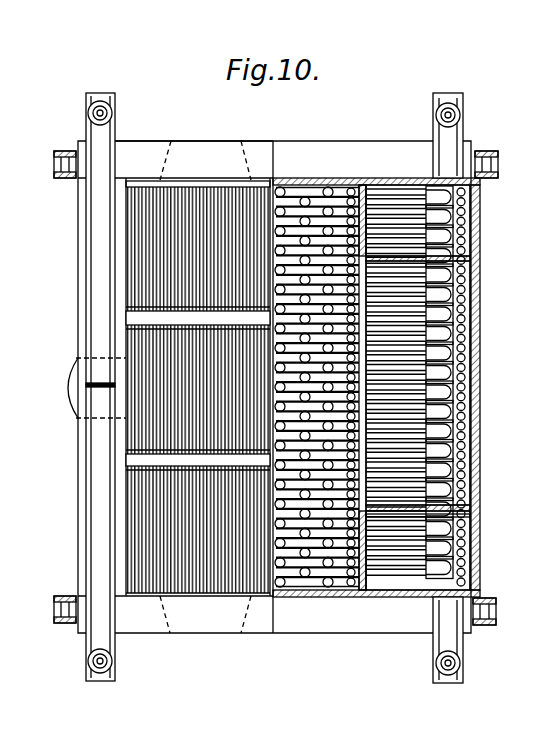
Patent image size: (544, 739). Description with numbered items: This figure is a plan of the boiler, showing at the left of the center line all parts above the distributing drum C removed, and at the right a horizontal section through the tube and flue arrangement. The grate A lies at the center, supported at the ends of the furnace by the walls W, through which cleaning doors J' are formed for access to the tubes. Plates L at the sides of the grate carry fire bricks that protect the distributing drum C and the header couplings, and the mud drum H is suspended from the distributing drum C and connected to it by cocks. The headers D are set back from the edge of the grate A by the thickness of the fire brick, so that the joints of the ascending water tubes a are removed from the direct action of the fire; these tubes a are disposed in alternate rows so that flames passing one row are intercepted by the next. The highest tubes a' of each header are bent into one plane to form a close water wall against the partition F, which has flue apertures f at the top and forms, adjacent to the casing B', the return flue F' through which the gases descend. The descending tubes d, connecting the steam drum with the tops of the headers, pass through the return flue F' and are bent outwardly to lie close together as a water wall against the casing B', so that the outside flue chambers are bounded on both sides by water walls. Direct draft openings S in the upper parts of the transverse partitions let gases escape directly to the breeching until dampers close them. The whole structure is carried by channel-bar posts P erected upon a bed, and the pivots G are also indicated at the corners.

The distributing drum C is at (105, 103).
The channel-bar post P is at (52, 170).
The cleaning door J' is at (175, 159).
The wall W is at (244, 143).
The water tube a is at (317, 387).
The casing B' is at (390, 386).
The water tube a' is at (360, 386).
The direct draft opening S is at (470, 251).
The return flue F' is at (443, 382).
The partition F is at (441, 524).
The flue aperture f is at (355, 496).
The descending tube d is at (86, 492).
The vertical header D is at (430, 572).
The mud drum H is at (66, 404).
The plate L is at (74, 541).
The grate A is at (212, 570).
The pivot G is at (104, 655).